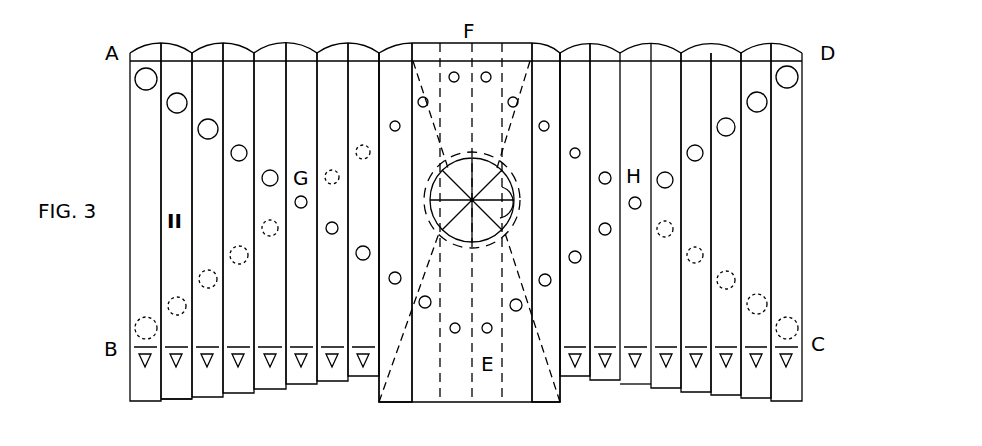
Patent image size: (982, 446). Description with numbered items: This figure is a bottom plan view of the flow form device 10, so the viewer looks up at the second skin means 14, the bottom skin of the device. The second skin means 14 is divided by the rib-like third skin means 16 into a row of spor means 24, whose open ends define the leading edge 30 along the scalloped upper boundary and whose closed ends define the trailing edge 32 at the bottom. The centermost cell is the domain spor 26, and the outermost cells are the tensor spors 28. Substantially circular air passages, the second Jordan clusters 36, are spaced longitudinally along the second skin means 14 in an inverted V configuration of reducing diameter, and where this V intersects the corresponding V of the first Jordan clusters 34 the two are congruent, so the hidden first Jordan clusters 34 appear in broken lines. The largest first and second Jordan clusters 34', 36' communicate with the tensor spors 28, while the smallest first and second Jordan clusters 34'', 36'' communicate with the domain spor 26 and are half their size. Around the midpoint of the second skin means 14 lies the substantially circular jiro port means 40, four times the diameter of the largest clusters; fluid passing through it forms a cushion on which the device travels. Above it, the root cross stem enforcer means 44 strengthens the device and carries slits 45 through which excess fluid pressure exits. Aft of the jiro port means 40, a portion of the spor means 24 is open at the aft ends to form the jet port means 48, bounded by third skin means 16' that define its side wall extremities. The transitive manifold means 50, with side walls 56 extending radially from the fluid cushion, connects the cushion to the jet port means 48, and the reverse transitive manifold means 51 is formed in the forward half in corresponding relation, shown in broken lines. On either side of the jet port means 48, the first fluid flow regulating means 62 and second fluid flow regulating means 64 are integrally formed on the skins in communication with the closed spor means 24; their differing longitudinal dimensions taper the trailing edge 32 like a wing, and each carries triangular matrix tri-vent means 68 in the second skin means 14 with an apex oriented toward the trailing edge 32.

The flow form device 10 is at (554, 34).
The second skin means 14 is at (280, 98).
The third skin means 16 is at (483, 215).
The third skin means defining side wall extremities of jet port means 16' is at (469, 222).
The spor means 24 is at (178, 241).
The domain spor 26 is at (429, 85).
The tensor spors 28 is at (147, 147).
The leading edge 30 is at (213, 43).
The trailing edge 32 is at (267, 390).
The first Jordan clusters 34 is at (467, 193).
The largest first Jordan clusters 34' is at (465, 318).
The smallest first Jordan clusters 34'' is at (505, 43).
The second Jordan clusters 36 is at (467, 201).
The largest second Jordan clusters 36' is at (462, 81).
The smallest second Jordan clusters 36'' is at (467, 345).
The jiro port means 40 is at (426, 205).
The root cross stem enforcer means 44 is at (508, 192).
The slits 45 is at (512, 213).
The jet port means 48 is at (455, 388).
The transitive manifold means 50 is at (457, 277).
The reverse transitive manifold means 51 is at (456, 126).
The side walls 56 is at (518, 263).
The first fluid flow regulating means 62 is at (176, 407).
The second fluid flow regulating means 64 is at (629, 393).
The matrix tri-vent means 68 is at (262, 360).